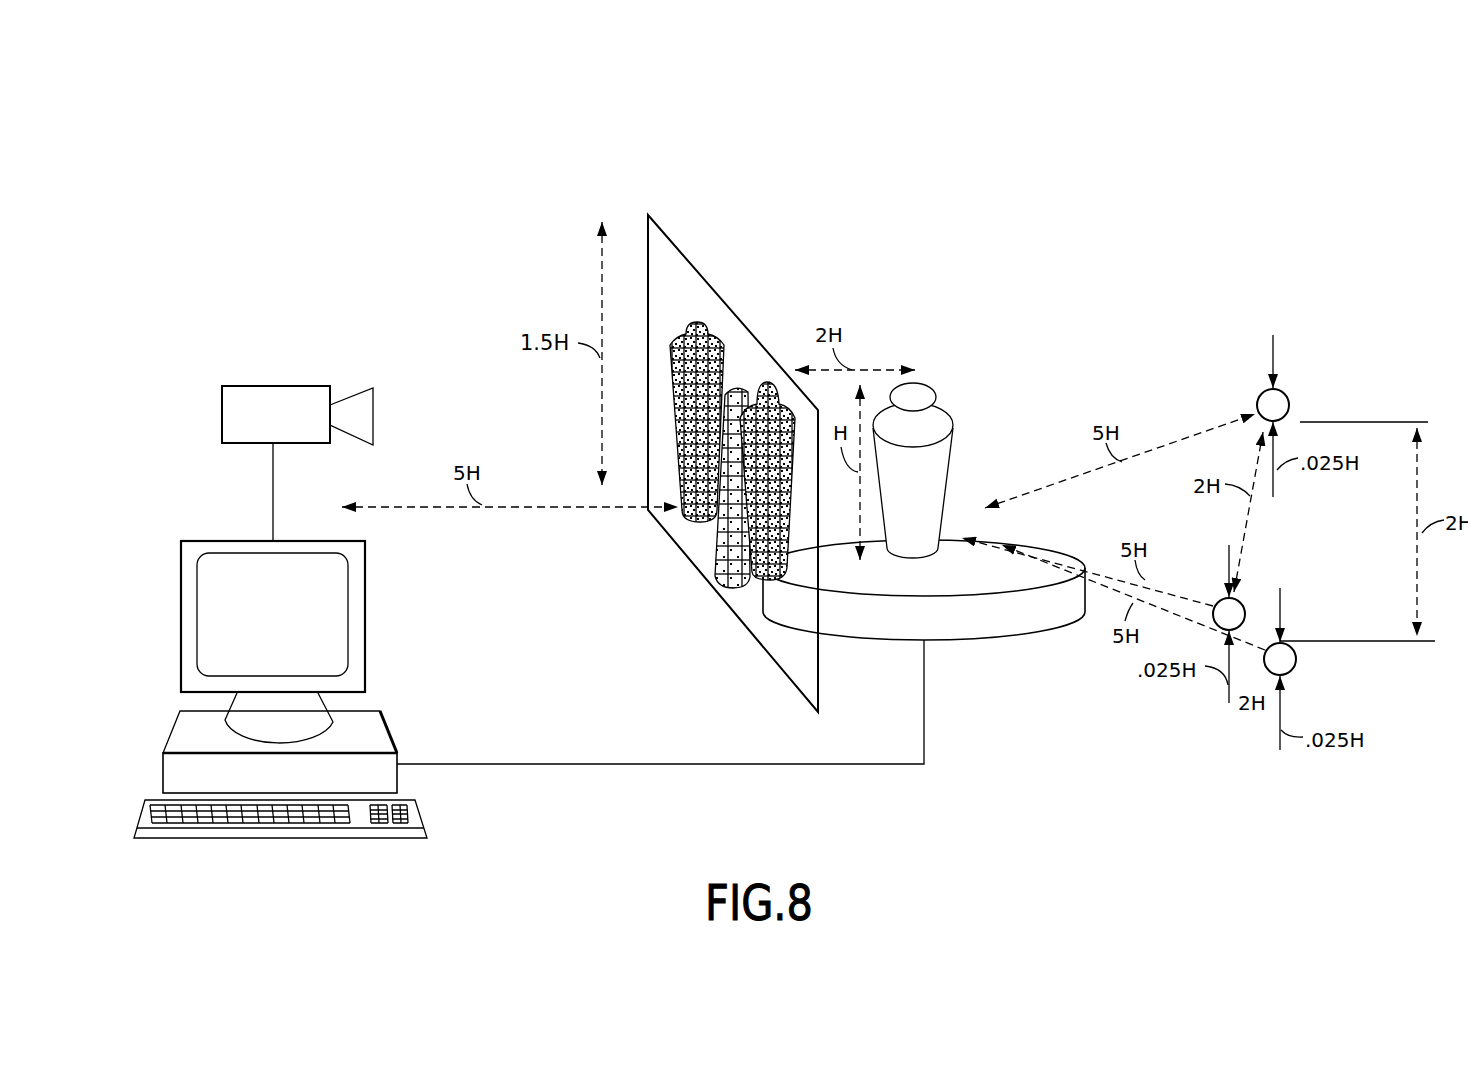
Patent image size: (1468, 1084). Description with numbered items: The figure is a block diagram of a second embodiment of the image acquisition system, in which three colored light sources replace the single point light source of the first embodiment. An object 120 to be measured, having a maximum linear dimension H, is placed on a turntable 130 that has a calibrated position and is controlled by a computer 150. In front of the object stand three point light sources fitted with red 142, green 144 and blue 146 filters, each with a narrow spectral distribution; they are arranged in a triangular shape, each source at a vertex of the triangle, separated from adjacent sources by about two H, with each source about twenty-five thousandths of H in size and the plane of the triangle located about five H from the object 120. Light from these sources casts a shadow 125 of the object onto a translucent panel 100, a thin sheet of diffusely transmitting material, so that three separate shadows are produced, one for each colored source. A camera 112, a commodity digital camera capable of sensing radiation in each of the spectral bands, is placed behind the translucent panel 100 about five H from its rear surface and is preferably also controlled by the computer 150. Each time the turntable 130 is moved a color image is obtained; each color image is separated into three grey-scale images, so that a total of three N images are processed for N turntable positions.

The translucent panel 100 is at (660, 229).
The camera 112 is at (270, 386).
The object 120 is at (936, 415).
The shadow 125 is at (700, 323).
The turntable 130 is at (990, 640).
The red light 142 is at (1286, 395).
The green light 144 is at (1297, 654).
The blue light 146 is at (1243, 602).
The computer 150 is at (367, 575).